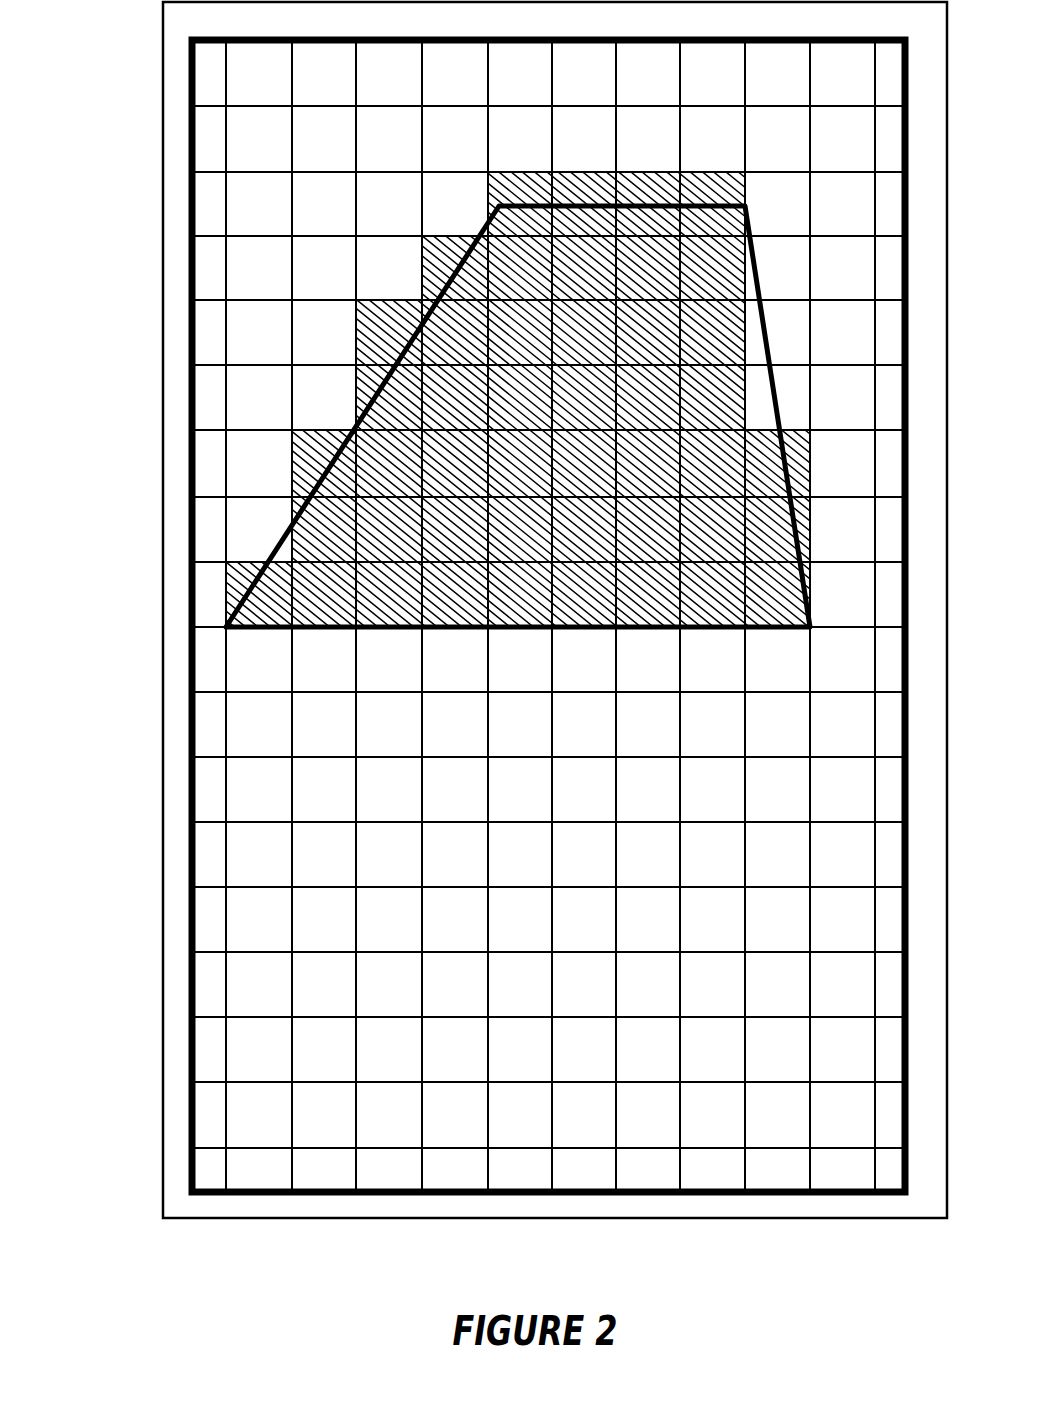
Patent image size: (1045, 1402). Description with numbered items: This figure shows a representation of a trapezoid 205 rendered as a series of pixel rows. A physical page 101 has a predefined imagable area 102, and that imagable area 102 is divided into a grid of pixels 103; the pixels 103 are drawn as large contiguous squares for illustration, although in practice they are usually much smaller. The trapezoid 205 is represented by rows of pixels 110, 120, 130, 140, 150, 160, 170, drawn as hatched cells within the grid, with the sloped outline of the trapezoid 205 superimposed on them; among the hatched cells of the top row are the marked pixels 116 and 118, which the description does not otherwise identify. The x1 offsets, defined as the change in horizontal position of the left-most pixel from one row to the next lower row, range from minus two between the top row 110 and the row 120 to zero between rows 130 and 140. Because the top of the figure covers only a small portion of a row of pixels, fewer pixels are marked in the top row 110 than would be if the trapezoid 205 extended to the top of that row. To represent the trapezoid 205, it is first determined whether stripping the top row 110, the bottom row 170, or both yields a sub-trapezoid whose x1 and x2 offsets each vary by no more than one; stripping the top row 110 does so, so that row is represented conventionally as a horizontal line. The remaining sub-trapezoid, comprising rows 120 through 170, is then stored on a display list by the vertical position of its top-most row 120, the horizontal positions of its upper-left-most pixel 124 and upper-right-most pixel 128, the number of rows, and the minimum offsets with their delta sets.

The physical page 101 is at (163, 312).
The imagable area 102 is at (188, 412).
The pixels 103 is at (342, 1028).
The trapezoid 205 is at (277, 533).
The top row 110 is at (750, 192).
The interior pixel 116 is at (568, 182).
The interior pixel 118 is at (700, 190).
The pixel row 120 is at (750, 283).
The upper-left-most pixel 124 is at (440, 262).
The upper-right-most pixel 128 is at (728, 253).
The pixel row 130 is at (750, 345).
The pixel row 140 is at (748, 412).
The pixel row 150 is at (815, 448).
The pixel row 160 is at (813, 533).
The bottom row 170 is at (812, 605).